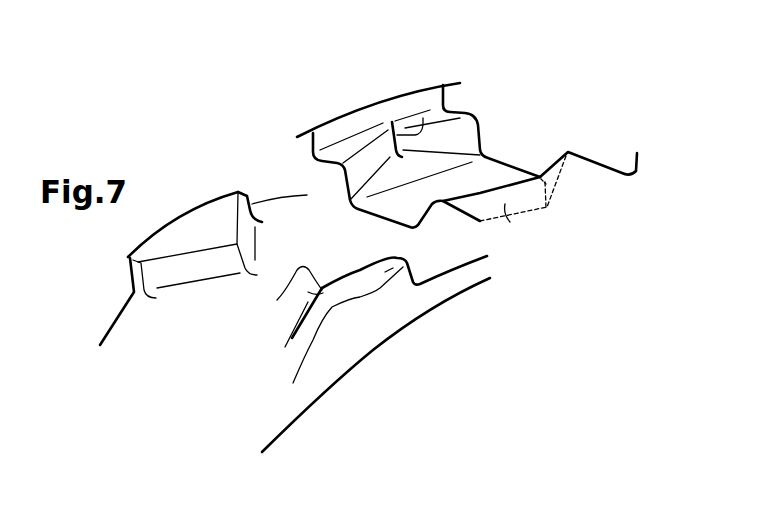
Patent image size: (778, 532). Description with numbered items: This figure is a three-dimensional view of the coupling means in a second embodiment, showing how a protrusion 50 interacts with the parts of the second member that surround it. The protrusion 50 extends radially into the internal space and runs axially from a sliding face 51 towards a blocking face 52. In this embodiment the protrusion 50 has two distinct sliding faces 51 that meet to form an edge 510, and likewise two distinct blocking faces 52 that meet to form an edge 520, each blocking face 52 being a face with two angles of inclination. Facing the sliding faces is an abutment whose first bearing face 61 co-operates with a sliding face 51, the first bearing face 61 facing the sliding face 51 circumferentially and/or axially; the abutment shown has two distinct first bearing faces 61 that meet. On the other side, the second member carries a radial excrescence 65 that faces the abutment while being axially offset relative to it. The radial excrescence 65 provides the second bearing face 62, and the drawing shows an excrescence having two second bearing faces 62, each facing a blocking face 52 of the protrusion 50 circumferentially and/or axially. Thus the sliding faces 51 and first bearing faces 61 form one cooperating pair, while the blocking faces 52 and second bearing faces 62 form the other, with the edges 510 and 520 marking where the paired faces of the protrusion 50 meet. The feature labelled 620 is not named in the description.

The protrusion 50 is at (507, 121).
The sliding face 51 is at (360, 147).
The edge 510 is at (423, 122).
The blocking face 52 is at (457, 240).
The edge 520 is at (552, 197).
The first bearing face 61 is at (270, 243).
The second bearing face 62 is at (349, 256).
The bump 620 is at (277, 300).
The radial excrescence 65 is at (362, 297).